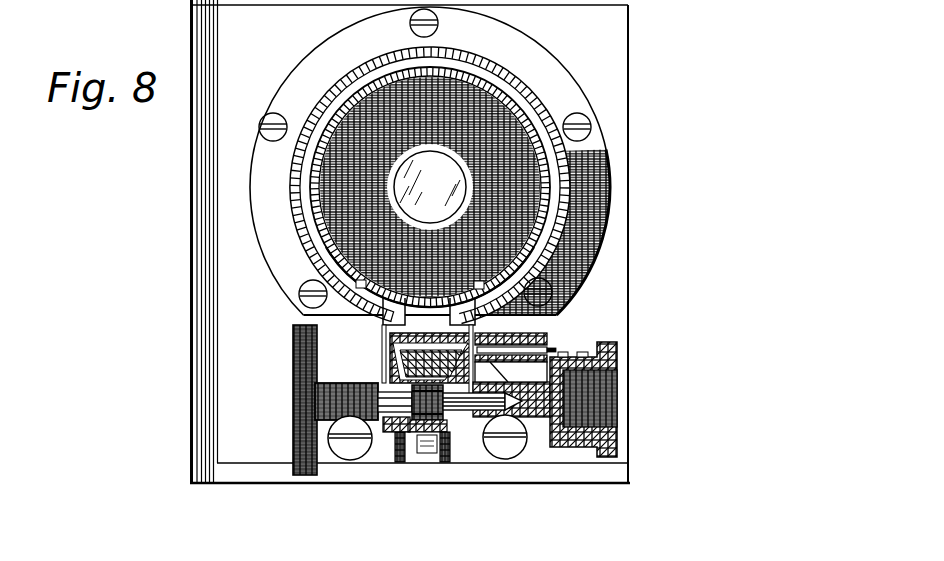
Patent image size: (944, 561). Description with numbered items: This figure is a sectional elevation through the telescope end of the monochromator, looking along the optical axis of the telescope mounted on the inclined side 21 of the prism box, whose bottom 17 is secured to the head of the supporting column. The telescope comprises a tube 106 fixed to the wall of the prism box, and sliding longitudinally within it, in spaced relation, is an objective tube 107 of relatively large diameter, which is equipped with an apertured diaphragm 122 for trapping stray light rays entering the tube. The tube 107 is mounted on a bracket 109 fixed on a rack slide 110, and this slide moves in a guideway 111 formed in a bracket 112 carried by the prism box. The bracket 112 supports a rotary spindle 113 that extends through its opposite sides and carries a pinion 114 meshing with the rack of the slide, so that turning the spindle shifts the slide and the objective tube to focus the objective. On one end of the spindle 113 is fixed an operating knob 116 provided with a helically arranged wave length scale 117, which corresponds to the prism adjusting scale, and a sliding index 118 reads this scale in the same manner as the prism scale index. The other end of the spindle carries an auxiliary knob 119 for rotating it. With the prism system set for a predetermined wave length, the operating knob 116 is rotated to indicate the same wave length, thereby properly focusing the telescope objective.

The inclined side 21 is at (409, 241).
The bottom 17 is at (609, 472).
The tube 106 is at (517, 78).
The objective tube 107 is at (523, 115).
The apertured diaphragm 122 is at (441, 137).
The bracket 109 is at (500, 268).
The rack slide 110 is at (421, 345).
The guideway 111 is at (363, 379).
The bracket 112 is at (397, 427).
The rotary spindle 113 is at (500, 402).
The pinion 114 is at (417, 410).
The operating knob 116 is at (604, 349).
The wave length scale 117 is at (580, 347).
The sliding index 118 is at (553, 347).
The auxiliary knob 119 is at (300, 411).